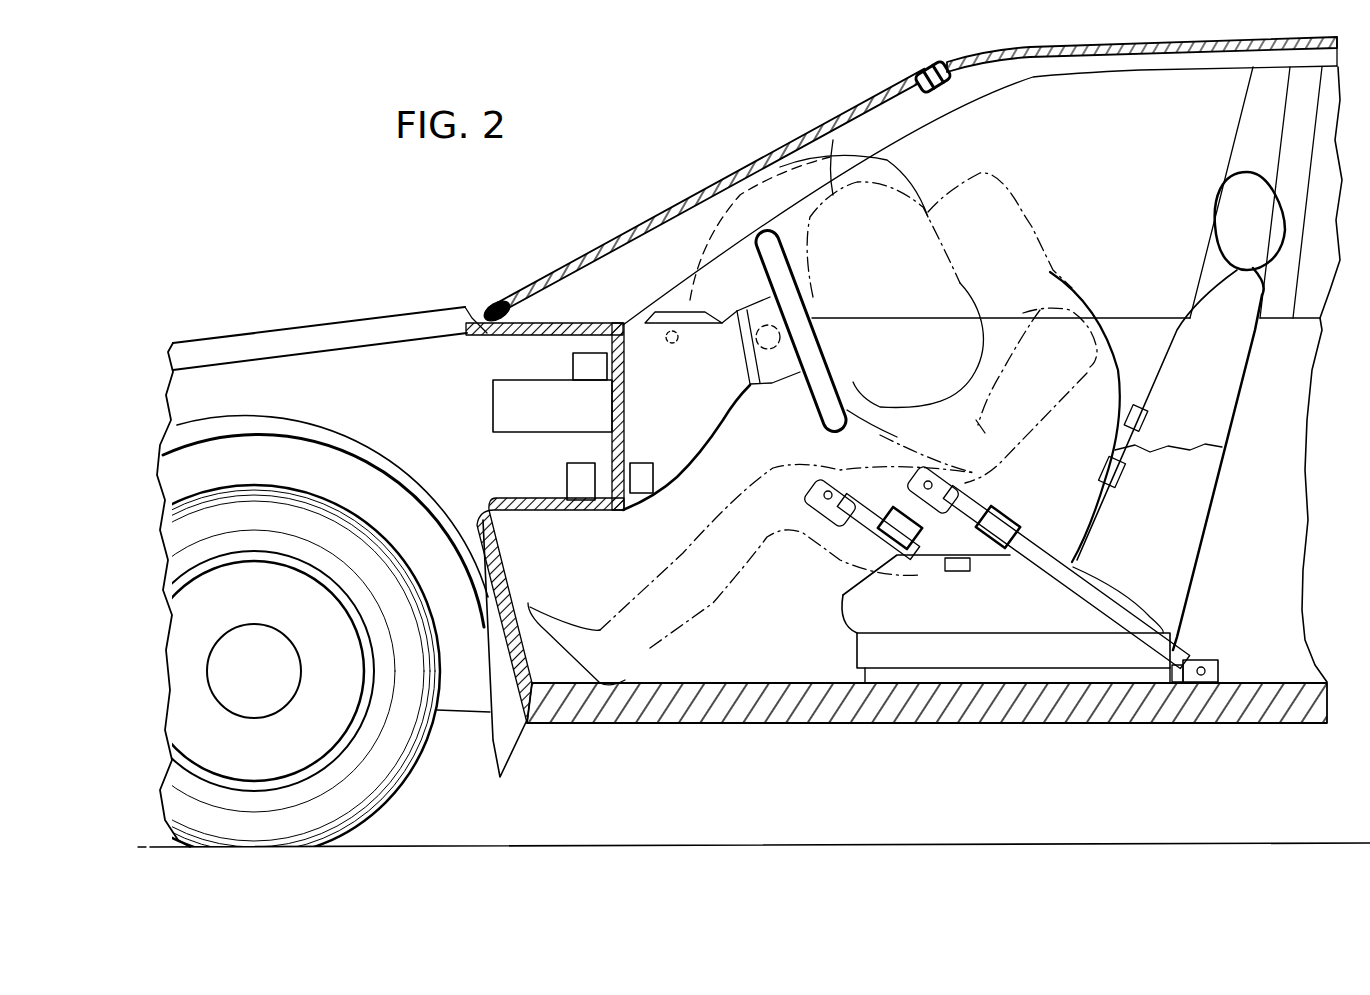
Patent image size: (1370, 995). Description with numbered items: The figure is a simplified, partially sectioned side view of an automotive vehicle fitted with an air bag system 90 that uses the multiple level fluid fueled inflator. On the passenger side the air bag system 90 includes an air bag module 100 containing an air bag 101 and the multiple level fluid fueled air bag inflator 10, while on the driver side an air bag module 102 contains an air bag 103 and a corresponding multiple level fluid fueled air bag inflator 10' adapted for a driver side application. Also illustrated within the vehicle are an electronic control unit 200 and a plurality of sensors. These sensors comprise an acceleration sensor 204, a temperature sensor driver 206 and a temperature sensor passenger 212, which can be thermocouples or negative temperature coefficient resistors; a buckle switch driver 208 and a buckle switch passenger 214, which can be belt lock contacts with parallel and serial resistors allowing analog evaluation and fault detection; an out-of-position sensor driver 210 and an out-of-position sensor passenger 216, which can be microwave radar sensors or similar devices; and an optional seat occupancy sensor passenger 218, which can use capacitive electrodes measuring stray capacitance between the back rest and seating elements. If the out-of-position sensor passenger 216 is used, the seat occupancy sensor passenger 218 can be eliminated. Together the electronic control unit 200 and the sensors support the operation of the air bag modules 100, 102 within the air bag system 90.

The air bag system 90 is at (374, 292).
The multiple level fluid fueled air bag inflator 10 is at (703, 237).
The multiple level fluid fueled air bag inflator 10' is at (779, 389).
The air bag module 100 is at (660, 322).
The air bag 101 is at (717, 213).
The air bag module 102 is at (810, 310).
The air bag 103 is at (833, 140).
The electronic control unit 200 is at (533, 398).
The acceleration sensor 204 is at (597, 370).
The temperature sensor driver 206 is at (645, 492).
The buckle switch driver 208 is at (992, 538).
The out-of-position sensor driver 210 is at (1120, 478).
The temperature sensor passenger 212 is at (575, 483).
The buckle switch passenger 214 is at (880, 522).
The out-of-position sensor passenger 216 is at (1142, 422).
The seat occupancy sensor passenger 218 is at (940, 573).